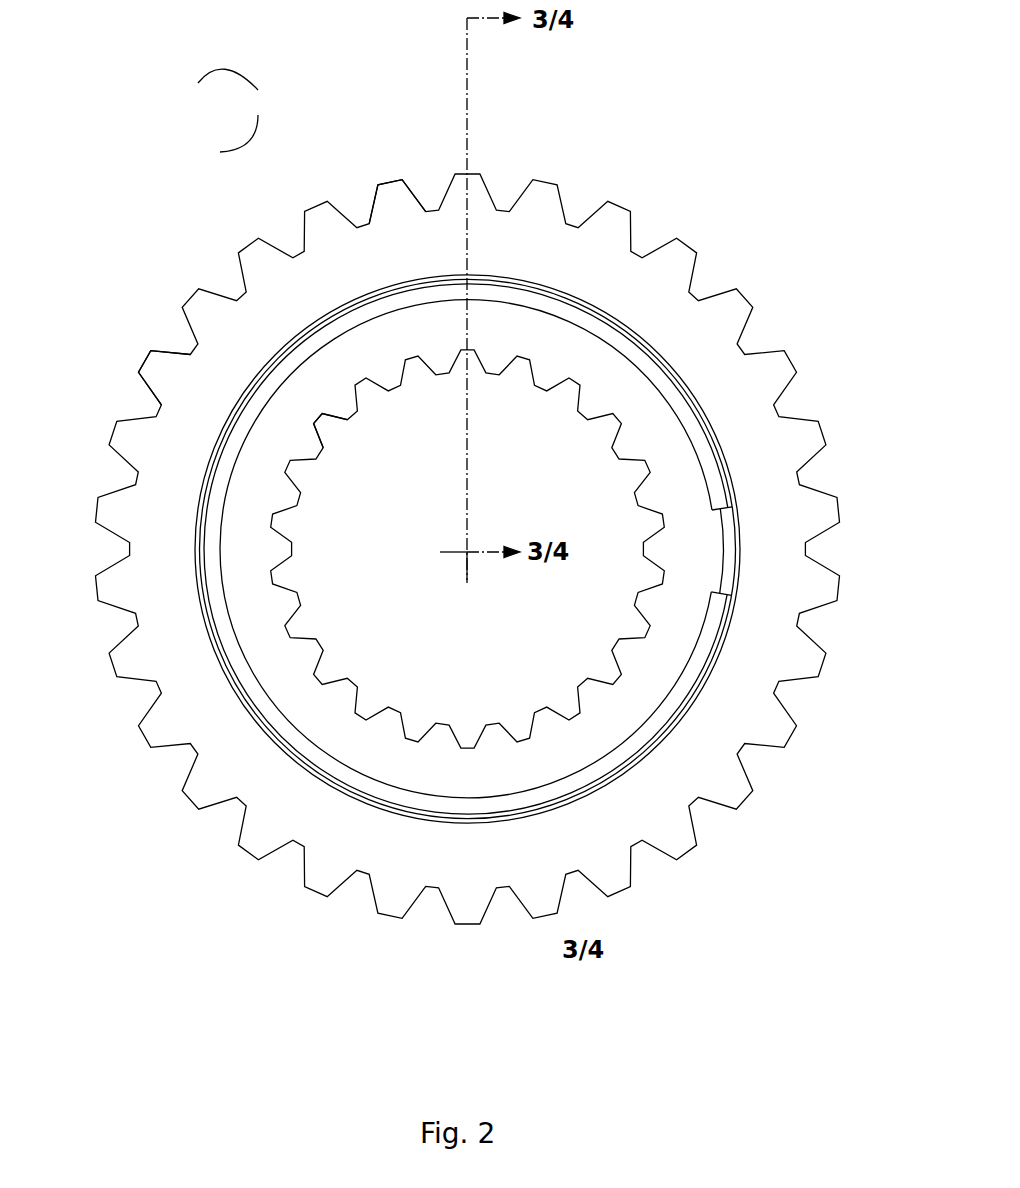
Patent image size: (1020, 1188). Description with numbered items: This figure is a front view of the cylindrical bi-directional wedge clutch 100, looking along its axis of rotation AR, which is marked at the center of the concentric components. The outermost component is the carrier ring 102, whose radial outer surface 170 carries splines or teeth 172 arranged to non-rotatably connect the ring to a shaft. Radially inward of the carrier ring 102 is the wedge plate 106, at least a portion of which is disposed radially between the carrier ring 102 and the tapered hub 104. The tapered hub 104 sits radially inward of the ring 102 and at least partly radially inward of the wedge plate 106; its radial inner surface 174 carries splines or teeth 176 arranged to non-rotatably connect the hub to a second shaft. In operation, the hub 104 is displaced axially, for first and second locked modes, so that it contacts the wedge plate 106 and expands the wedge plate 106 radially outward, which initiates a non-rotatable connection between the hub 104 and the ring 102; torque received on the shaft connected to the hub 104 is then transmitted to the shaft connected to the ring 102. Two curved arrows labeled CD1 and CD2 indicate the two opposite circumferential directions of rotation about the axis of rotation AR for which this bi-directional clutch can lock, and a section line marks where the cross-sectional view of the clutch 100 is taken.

The cylindrical bi-directional wedge clutch 100 is at (442, 496).
The carrier ring 102 is at (394, 183).
The tapered hub 104 is at (243, 445).
The wedge plate 106 is at (283, 348).
The radial outer surface 170 is at (92, 510).
The splines or teeth 172 is at (147, 358).
The radial inner surface 174 is at (577, 417).
The splines or teeth 176 is at (318, 450).
The axis of rotation AR is at (467, 552).
The first circumferential direction CD1 is at (310, 97).
The second circumferential direction CD2 is at (293, 73).